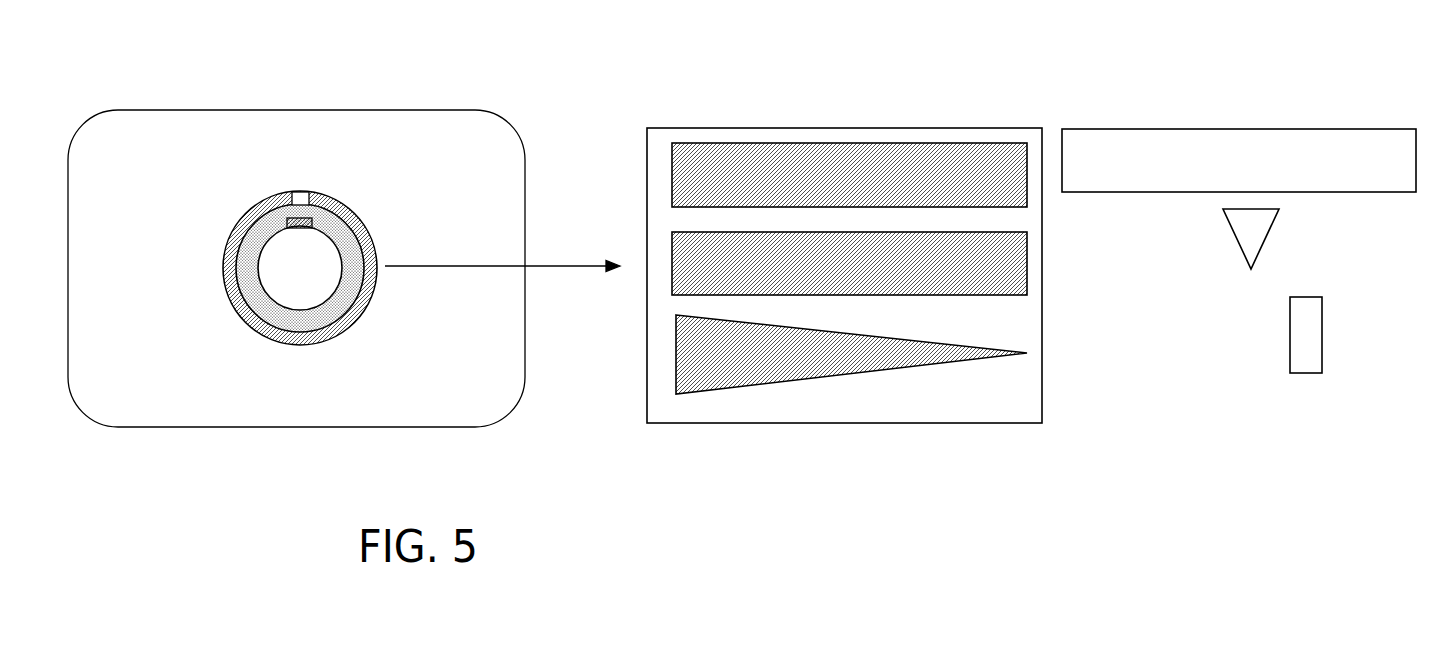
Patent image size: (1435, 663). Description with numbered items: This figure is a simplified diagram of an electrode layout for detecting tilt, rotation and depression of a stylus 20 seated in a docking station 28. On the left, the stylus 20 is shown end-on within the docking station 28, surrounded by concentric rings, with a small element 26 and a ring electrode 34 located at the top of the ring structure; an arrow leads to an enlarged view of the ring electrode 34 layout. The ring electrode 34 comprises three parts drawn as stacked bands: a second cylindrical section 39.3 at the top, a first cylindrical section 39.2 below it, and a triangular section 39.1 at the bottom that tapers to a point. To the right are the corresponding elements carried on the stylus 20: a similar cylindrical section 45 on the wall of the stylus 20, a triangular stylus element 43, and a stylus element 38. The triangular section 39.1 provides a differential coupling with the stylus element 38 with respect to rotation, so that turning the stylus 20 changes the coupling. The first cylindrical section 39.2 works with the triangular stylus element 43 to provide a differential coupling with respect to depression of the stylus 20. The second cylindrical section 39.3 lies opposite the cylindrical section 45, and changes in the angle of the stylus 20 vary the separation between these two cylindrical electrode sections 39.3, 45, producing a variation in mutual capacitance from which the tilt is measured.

The docking station 28 is at (122, 108).
The stylus 20 is at (285, 260).
The ring electrode 34 is at (314, 194).
The marker element 26 is at (317, 223).
The second cylindrical section 39.3 is at (973, 165).
The first cylindrical section 39.2 is at (988, 262).
The triangular section 39.1 is at (968, 356).
The cylindrical section 45 is at (1199, 128).
The triangular stylus element 43 is at (1265, 240).
The stylus element 38 is at (1300, 353).